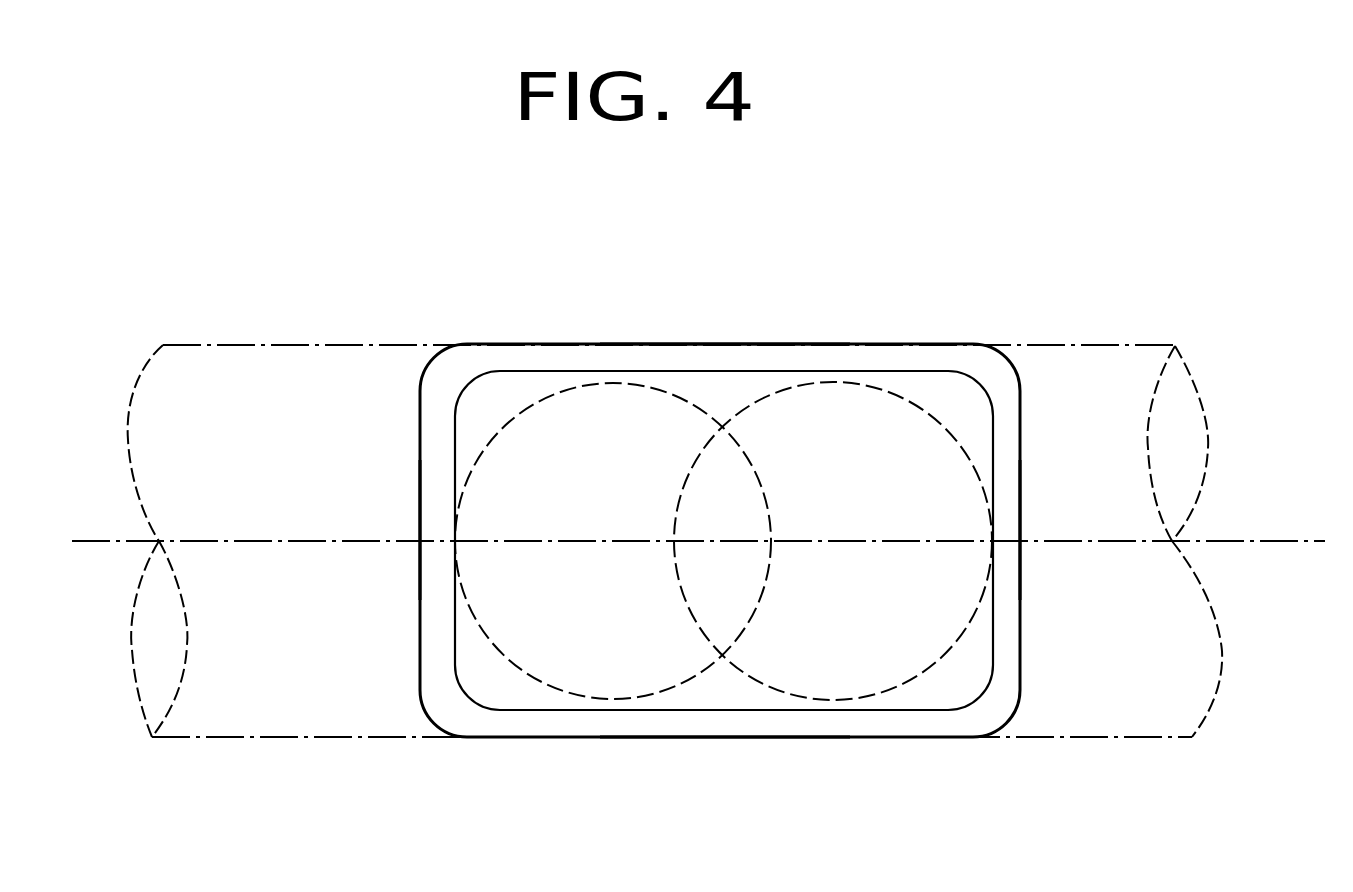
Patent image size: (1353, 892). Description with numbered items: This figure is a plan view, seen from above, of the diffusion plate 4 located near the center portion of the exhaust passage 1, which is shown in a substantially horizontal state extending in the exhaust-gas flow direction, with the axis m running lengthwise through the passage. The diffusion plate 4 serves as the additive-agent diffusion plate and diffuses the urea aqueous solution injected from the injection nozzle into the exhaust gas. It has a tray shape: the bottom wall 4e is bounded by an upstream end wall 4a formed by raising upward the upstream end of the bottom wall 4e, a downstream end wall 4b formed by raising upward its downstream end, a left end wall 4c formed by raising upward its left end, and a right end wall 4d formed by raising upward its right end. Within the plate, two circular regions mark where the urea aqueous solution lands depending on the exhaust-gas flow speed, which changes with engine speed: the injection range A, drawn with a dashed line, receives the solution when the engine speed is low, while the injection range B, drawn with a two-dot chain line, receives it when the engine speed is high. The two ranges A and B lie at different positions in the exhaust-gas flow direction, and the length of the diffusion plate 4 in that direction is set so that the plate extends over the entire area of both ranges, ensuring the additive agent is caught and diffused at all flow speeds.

The exhaust passage 1 is at (260, 344).
The diffusion plate 4 is at (683, 345).
The upstream end wall 4a is at (435, 652).
The downstream end wall 4b is at (1012, 505).
The left end wall 4c is at (683, 725).
The right end wall 4d is at (786, 357).
The bottom wall 4e is at (728, 688).
The injection range A is at (530, 402).
The injection range B is at (944, 428).
The pipe center axis m is at (1305, 541).